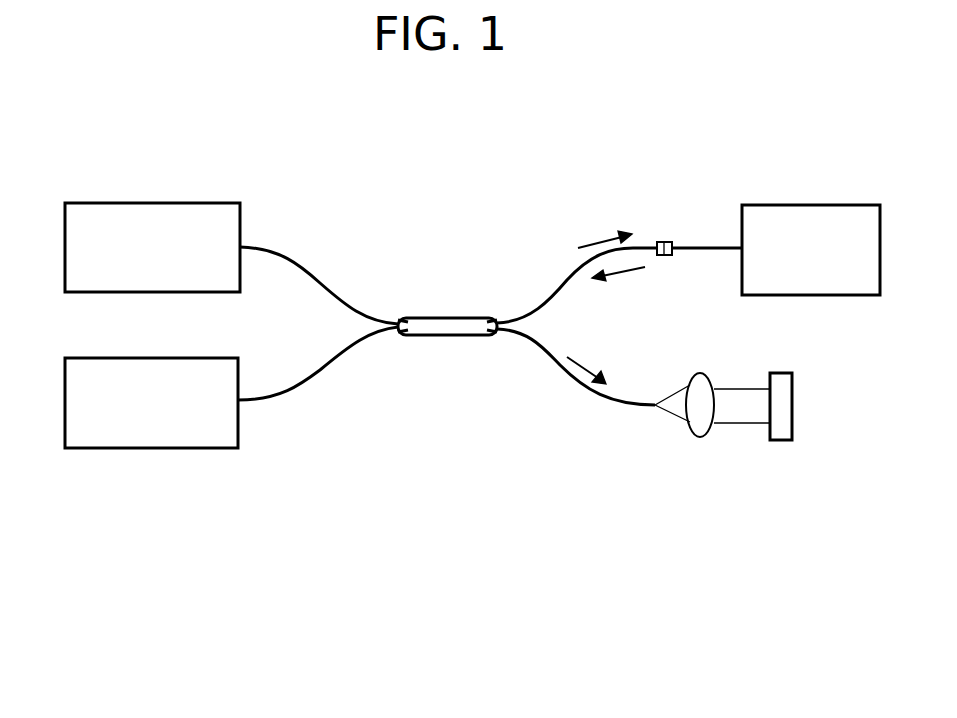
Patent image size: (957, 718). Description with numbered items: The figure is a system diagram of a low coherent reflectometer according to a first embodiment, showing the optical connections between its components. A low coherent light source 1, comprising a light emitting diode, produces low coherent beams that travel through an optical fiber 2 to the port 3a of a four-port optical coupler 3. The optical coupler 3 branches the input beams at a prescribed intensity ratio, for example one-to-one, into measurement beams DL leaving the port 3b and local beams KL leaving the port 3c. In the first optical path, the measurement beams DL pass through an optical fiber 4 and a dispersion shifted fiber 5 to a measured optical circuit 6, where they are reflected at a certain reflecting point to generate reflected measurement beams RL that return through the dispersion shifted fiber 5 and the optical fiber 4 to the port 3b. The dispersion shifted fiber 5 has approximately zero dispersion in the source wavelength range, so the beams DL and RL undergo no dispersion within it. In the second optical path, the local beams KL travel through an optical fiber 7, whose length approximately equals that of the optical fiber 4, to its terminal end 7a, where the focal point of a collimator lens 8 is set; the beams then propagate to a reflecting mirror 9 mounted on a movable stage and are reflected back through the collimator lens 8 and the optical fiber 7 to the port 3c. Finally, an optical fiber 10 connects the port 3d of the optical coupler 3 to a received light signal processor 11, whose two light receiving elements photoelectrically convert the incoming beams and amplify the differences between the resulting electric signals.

The low coherent light source 1 is at (158, 203).
The optical fiber 2 is at (302, 262).
The optical coupler 3 is at (443, 318).
The port 3a is at (400, 318).
The port 3b is at (498, 318).
The port 3c is at (497, 335).
The port 3d is at (396, 335).
The optical fiber 4 is at (566, 279).
The dispersion shifted fiber 5 is at (704, 245).
The measured optical circuit 6 is at (790, 205).
The optical fiber 7 is at (577, 388).
The terminal end 7a is at (657, 410).
The collimator lens 8 is at (700, 373).
The reflecting mirror 9 is at (783, 373).
The optical fiber 10 is at (312, 370).
The received light signal processor 11 is at (150, 358).
The measurement beams DL is at (596, 240).
The reflected measurement beams RL is at (628, 275).
The local beams KL is at (587, 363).